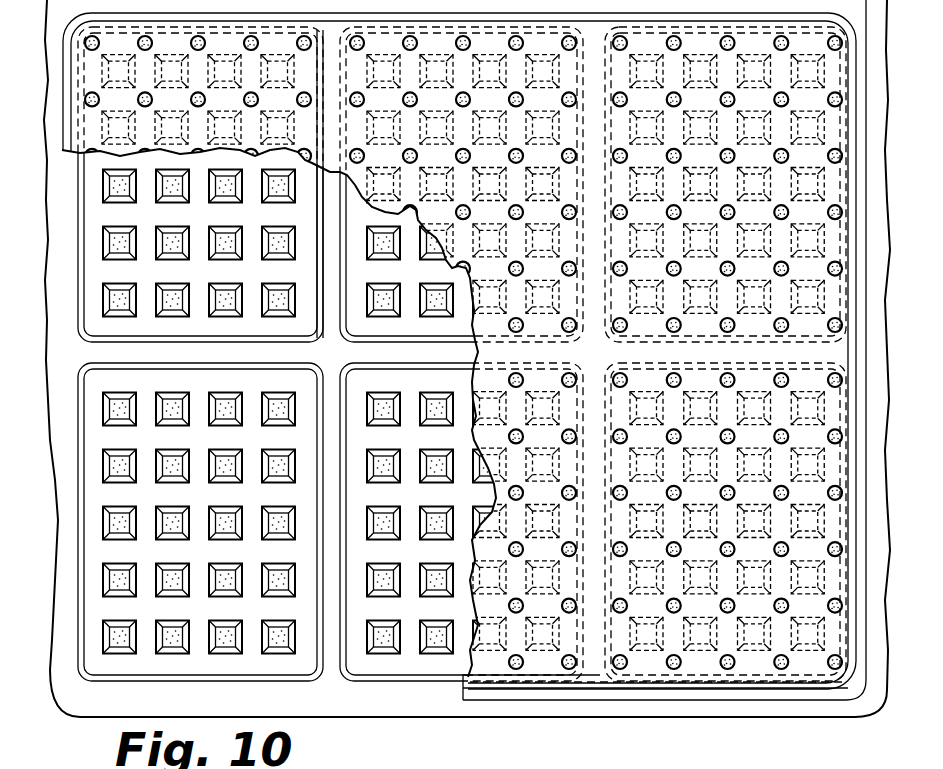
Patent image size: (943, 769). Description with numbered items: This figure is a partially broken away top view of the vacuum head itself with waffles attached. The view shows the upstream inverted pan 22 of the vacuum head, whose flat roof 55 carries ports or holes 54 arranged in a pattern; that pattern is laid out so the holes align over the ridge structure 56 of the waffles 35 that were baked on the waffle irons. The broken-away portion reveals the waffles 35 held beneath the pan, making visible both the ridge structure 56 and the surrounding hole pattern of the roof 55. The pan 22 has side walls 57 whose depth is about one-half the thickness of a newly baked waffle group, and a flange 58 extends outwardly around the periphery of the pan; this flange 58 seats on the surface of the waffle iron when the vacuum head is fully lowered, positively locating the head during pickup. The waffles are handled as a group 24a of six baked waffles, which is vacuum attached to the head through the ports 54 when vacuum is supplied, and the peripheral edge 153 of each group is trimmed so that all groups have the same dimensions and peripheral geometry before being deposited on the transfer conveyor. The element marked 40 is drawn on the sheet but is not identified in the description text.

The ports or holes 54 is at (192, 43).
The ridge structure 56 is at (150, 540).
The group of baked waffles 24a is at (437, 667).
The waffles 35 is at (108, 683).
The inverted pan 22 is at (597, 674).
The side walls 57 is at (600, 680).
The flange 58 is at (667, 690).
The flat roof 55 is at (697, 663).
The peripheral edge 153 is at (763, 710).
The inner edge 40 is at (826, 762).